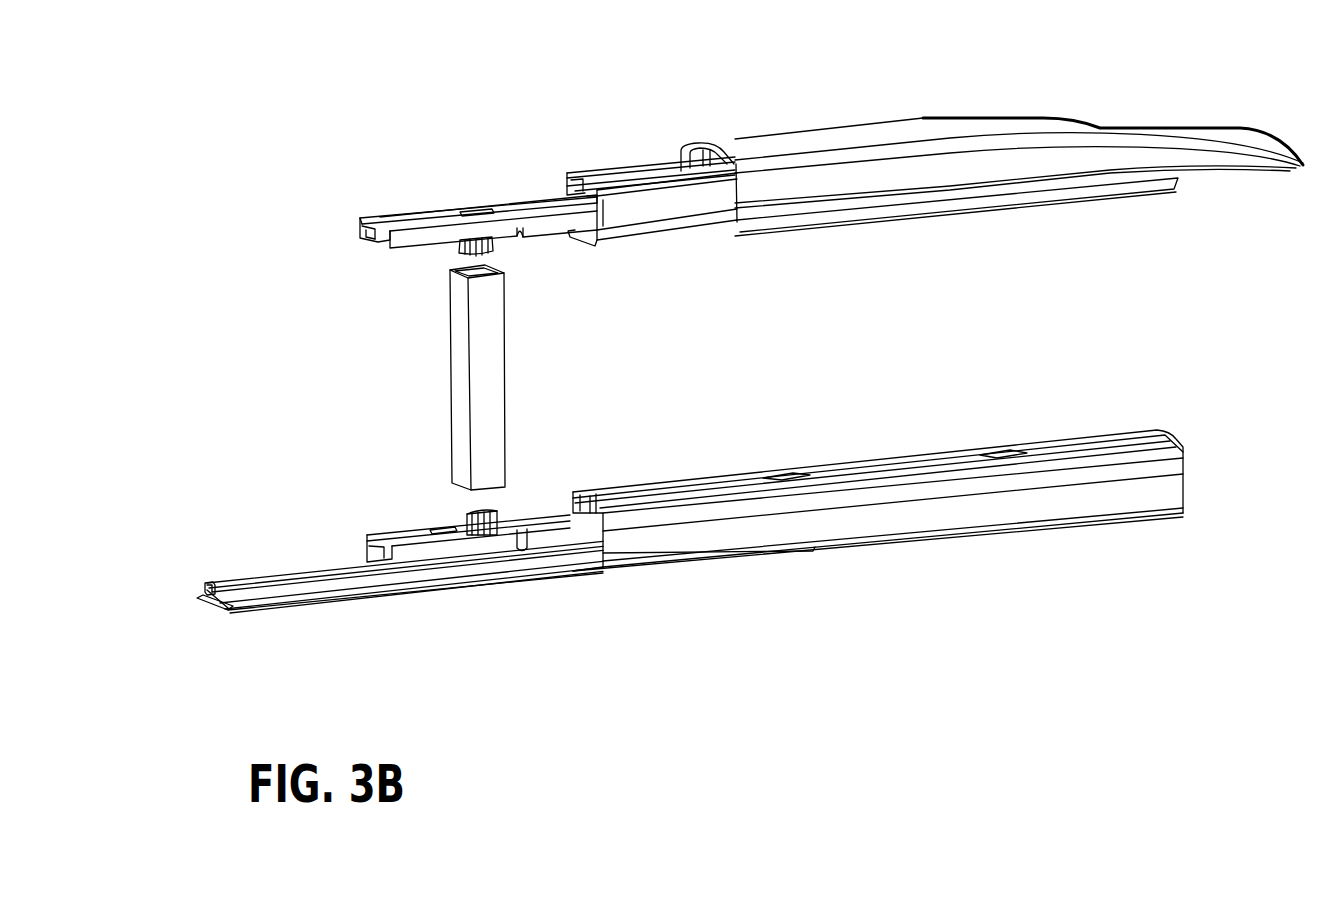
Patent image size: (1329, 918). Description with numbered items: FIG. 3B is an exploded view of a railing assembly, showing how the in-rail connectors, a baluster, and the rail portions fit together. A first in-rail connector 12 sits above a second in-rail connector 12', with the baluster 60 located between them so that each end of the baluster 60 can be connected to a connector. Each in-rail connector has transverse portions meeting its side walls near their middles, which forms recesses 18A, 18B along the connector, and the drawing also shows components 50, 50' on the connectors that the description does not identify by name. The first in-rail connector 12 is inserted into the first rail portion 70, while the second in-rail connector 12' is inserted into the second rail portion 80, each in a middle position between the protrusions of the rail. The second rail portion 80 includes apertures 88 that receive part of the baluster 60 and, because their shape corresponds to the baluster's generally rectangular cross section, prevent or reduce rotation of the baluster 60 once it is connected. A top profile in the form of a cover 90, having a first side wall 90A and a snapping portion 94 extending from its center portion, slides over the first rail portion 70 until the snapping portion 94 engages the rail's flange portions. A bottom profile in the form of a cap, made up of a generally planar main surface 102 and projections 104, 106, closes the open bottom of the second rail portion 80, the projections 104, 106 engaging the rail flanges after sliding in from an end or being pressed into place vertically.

The first in-rail connector 12 is at (478, 178).
The second in-rail connector 12' is at (435, 524).
The recess 18A is at (419, 215).
The recess 18B is at (366, 209).
The gear 50 is at (528, 272).
The lower gear 50' is at (441, 497).
The baluster 60 is at (482, 358).
The first rail portion 70 is at (658, 233).
The second rail portion 80 is at (928, 518).
The aperture 88 is at (776, 464).
The cover 90 is at (853, 138).
The first side wall 90A is at (779, 130).
The snapping portion 94 is at (589, 168).
The main surface 102 is at (208, 604).
The projection 104 is at (203, 580).
The projection 106 is at (261, 595).